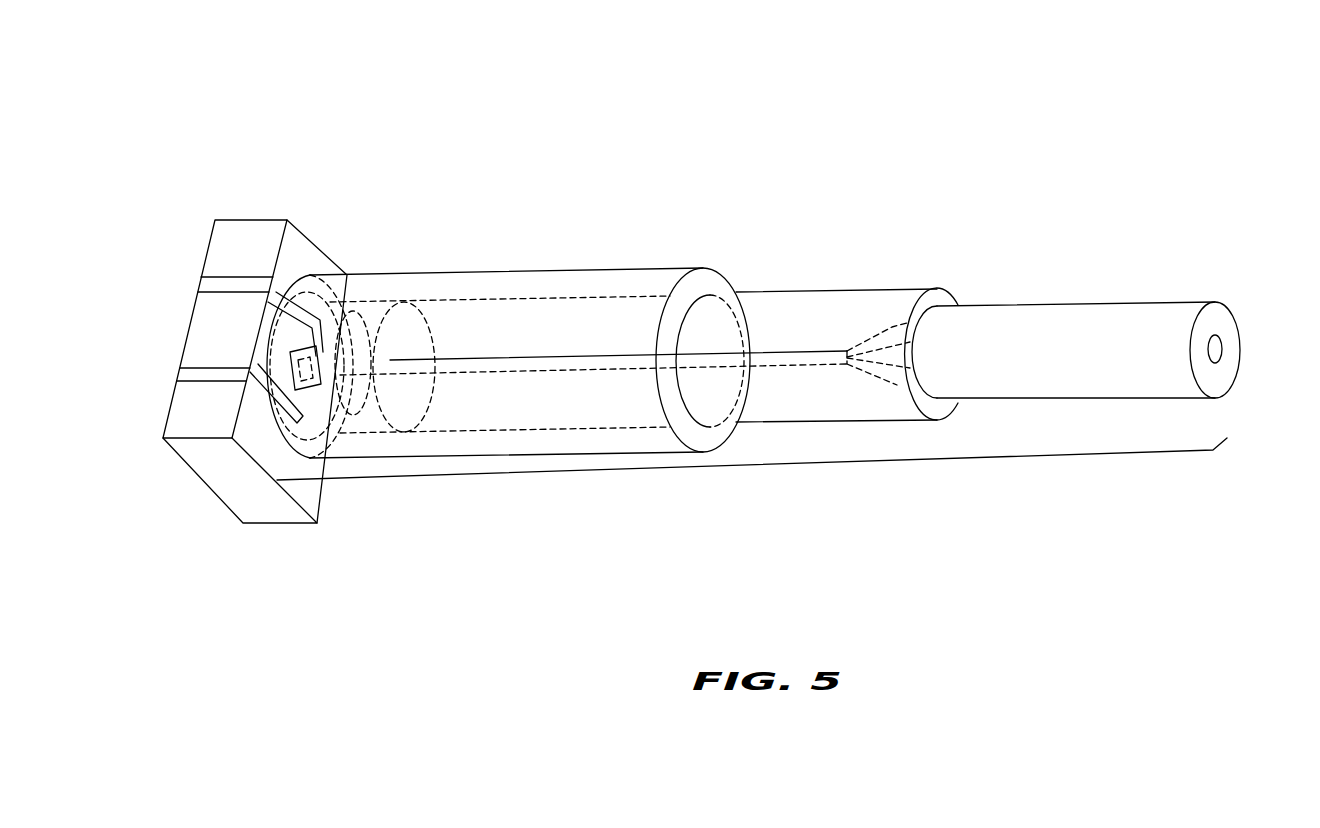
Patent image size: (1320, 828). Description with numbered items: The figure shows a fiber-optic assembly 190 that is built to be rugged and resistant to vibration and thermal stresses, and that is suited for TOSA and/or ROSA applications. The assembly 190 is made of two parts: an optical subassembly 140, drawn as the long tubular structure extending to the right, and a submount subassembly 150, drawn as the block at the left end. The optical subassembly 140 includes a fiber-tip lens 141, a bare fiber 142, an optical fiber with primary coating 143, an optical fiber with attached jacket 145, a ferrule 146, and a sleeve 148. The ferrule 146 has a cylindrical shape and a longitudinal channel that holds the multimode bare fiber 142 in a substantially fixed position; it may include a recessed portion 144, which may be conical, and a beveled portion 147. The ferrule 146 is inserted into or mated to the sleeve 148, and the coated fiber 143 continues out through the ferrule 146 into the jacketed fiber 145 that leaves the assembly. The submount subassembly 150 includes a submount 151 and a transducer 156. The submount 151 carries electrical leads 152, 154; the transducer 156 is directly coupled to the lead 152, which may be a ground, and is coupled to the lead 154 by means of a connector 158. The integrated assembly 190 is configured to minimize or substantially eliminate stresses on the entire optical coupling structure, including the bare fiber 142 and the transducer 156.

The optical subassembly 140 is at (738, 468).
The fiber-tip lens 141 is at (344, 330).
The bare fiber 142 is at (390, 362).
The optical fiber with primary coating 143 is at (892, 327).
The recessed portion 144 is at (897, 385).
The optical fiber with attached jacket 145 is at (1115, 322).
The ferrule 146 is at (825, 297).
The beveled portion 147 is at (362, 335).
The sleeve 148 is at (625, 272).
The submount subassembly 150 is at (153, 543).
The submount 151 is at (258, 232).
The electrical lead 152 is at (200, 272).
The electrical lead 154 is at (180, 365).
The transducer 156 is at (300, 373).
The connector 158 is at (265, 395).
The fiber-optic assembly 190 is at (1078, 73).